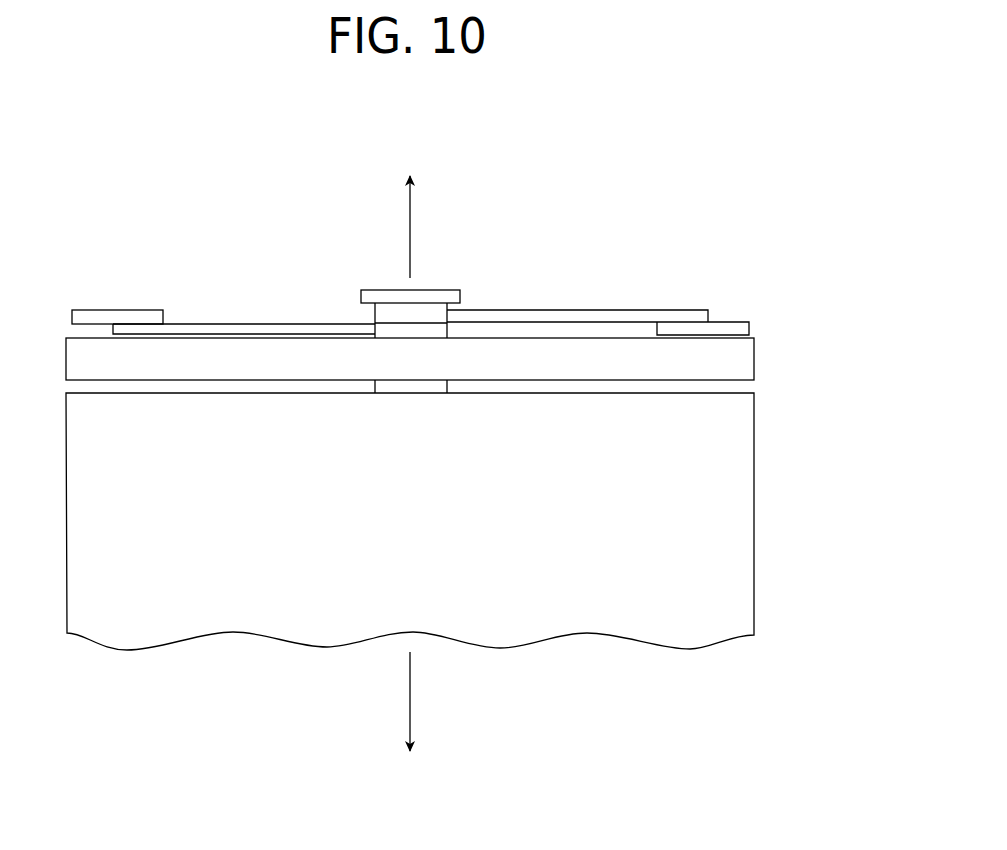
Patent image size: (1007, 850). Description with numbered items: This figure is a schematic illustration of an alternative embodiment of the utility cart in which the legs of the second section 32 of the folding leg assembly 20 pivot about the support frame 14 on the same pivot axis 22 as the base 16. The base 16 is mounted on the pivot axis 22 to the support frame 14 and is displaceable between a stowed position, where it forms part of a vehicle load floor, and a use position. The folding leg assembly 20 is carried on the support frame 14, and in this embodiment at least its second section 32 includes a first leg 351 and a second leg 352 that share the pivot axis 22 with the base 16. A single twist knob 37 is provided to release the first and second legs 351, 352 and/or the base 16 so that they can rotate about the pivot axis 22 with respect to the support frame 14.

The folding leg assembly 20 is at (649, 186).
The base 16 is at (720, 538).
The support frame 14 is at (525, 352).
The second section 32 is at (279, 276).
The first leg 351 is at (223, 327).
The second leg 352 is at (625, 315).
The twist knob 37 is at (433, 297).
The pivot axis 22 is at (407, 715).